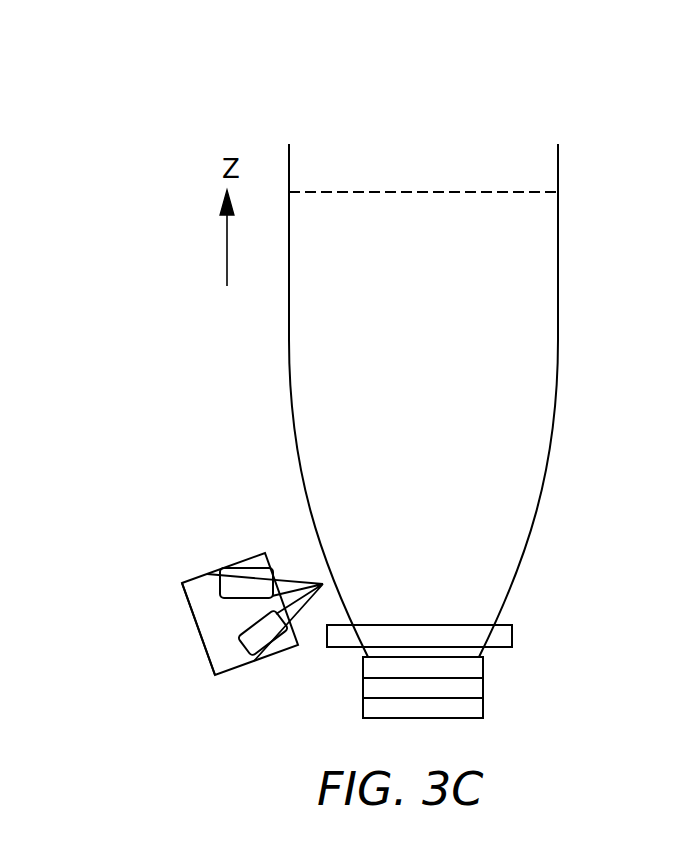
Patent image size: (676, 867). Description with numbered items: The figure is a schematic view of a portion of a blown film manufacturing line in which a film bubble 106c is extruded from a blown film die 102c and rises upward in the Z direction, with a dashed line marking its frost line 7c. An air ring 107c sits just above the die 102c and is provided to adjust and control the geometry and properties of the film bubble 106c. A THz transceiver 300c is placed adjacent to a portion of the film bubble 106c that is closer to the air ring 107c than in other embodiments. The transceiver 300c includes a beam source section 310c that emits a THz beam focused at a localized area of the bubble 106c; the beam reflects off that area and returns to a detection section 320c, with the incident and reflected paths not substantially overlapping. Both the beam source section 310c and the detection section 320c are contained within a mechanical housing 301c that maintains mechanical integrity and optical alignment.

The frost line 7c is at (413, 193).
The film bubble 106c is at (289, 353).
The air ring 107c is at (513, 632).
The blown film die 102c is at (363, 687).
The THz transceiver 300c is at (187, 590).
The mechanical housing 301c is at (202, 642).
The beam source section 310c is at (207, 575).
The detection section 320c is at (228, 668).